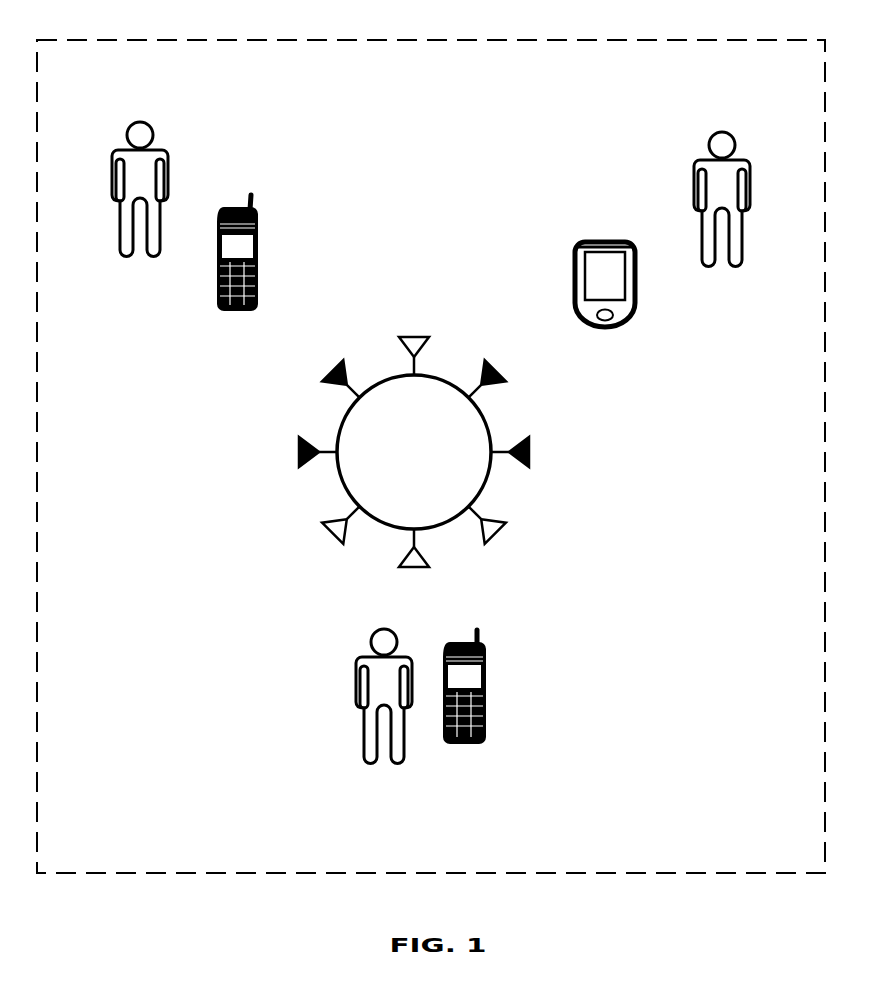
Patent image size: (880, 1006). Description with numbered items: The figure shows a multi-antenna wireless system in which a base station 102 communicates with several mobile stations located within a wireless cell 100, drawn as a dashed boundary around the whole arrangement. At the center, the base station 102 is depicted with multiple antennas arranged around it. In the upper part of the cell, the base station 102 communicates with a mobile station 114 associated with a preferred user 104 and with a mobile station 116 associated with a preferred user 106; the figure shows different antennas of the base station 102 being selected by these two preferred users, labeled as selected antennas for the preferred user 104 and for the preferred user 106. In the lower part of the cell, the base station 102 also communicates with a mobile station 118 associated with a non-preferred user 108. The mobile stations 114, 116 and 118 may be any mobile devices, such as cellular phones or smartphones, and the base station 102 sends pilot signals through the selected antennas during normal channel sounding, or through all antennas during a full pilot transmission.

The wireless cell 100 is at (431, 456).
The base station 102 is at (414, 452).
The preferred user 104 is at (300, 447).
The preferred user 106 is at (526, 443).
The non-preferred user 108 is at (383, 735).
The mobile station 114 is at (234, 216).
The mobile station 116 is at (607, 243).
The mobile station 118 is at (513, 688).